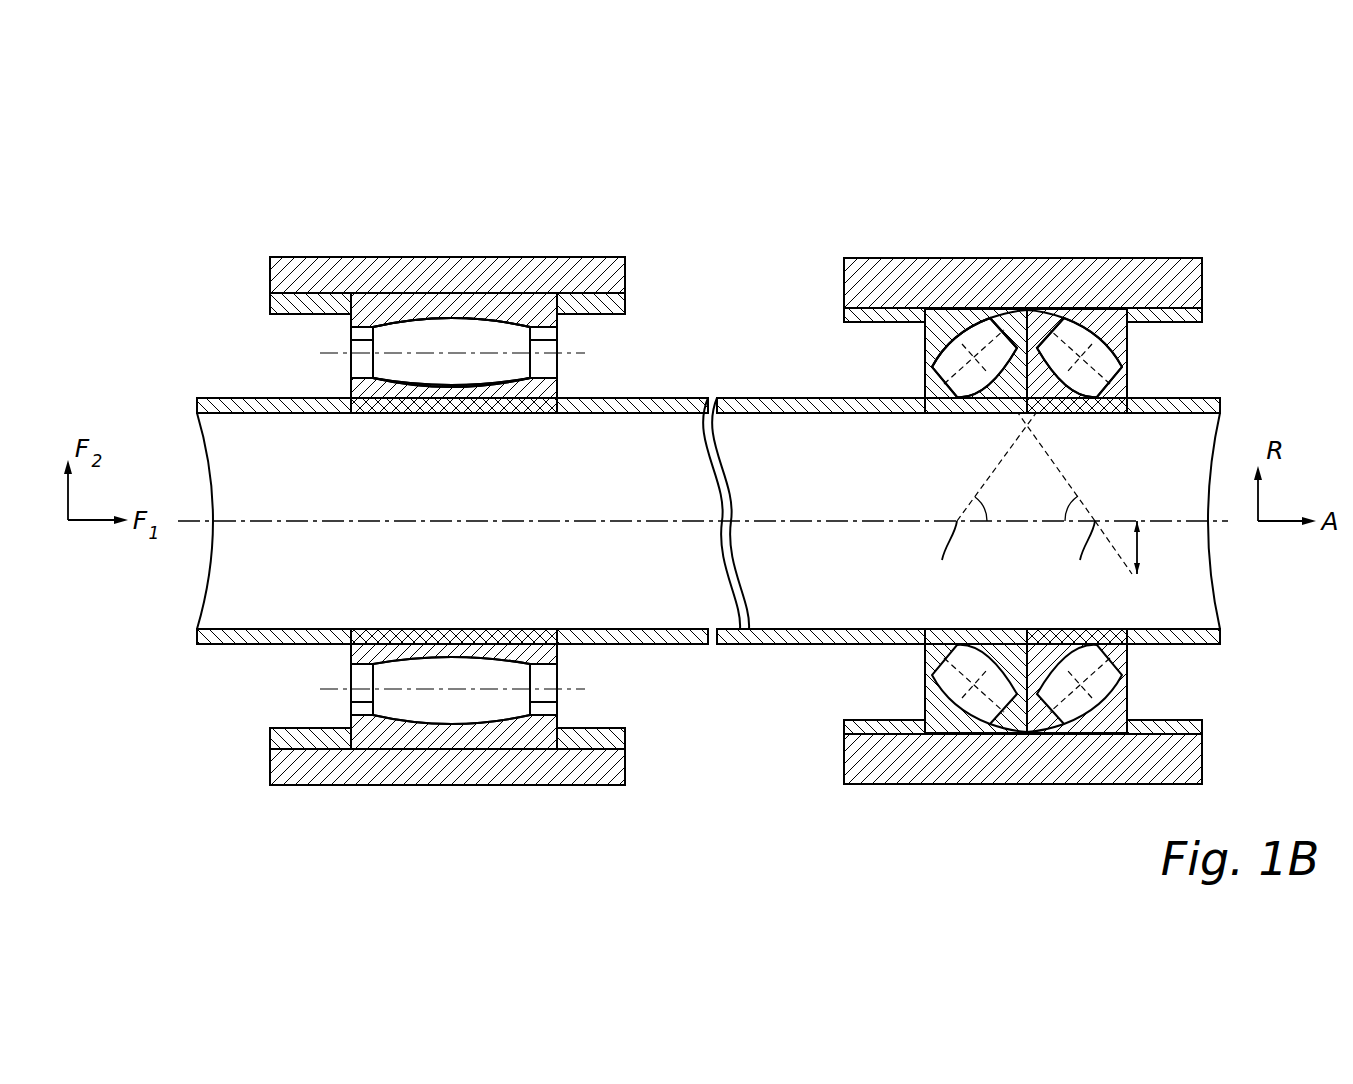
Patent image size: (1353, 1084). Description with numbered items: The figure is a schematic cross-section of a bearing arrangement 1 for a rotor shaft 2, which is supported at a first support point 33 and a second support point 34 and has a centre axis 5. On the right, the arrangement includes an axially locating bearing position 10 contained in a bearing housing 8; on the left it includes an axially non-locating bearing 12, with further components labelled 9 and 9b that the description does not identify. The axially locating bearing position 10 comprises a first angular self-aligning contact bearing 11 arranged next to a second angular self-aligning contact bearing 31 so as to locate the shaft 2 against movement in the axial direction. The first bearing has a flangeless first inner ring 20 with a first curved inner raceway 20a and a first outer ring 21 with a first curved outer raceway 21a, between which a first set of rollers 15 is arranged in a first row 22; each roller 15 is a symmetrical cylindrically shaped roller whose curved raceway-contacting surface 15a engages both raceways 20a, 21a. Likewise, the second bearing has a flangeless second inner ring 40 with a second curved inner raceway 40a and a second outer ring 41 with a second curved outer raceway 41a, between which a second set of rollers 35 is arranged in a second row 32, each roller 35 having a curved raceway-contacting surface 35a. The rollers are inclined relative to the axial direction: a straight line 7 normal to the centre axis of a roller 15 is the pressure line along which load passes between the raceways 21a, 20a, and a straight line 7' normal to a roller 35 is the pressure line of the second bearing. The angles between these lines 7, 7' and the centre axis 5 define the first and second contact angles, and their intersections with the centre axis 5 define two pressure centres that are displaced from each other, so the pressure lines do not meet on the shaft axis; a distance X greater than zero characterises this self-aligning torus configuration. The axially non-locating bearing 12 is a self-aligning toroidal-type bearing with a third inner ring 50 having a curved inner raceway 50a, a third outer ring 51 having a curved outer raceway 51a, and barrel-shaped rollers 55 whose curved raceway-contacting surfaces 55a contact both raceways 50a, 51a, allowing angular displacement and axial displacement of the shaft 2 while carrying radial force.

The bearing arrangement 1 is at (760, 177).
The rotor shaft 2 is at (686, 470).
The centre axis of the rotor shaft 5 is at (200, 522).
The straight line normal to the roller centre axis 7 is at (1076, 493).
The straight line normal to the roller centre axis 7' is at (952, 467).
The bearing housing 8 is at (1148, 272).
The housing 9 is at (283, 268).
The rolling element 9b is at (453, 333).
The axially locating bearing position 10 is at (1043, 361).
The first angular self-aligning contact bearing 11 is at (870, 337).
The axially non-locating bearing 12 is at (429, 304).
The rollers 15 is at (945, 312).
The curved raceway-contacting surface 15a is at (1018, 337).
The first inner ring 20 is at (937, 413).
The first curved inner raceway 20a is at (985, 413).
The first outer ring 21 is at (925, 318).
The first curved outer raceway 21a is at (990, 327).
The first row 22 is at (928, 385).
The second angular self-aligning contact bearing 31 is at (1211, 340).
The second row 32 is at (932, 366).
The first support point 33 is at (972, 787).
The second support point 34 is at (472, 773).
The rollers 35 is at (1063, 327).
The curved raceway-contacting surface 35a is at (1108, 405).
The second inner ring 40 is at (1220, 402).
The second curved inner raceway 40a is at (1095, 413).
The second outer ring 41 is at (1083, 313).
The second curved outer raceway 41a is at (1130, 329).
The third inner ring 50 is at (363, 400).
The curved inner raceway 50a is at (417, 388).
The third outer ring 51 is at (370, 310).
The curved outer raceway 51a is at (405, 323).
The rollers 55 is at (500, 340).
The curved raceway-contacting surface 55a is at (483, 385).